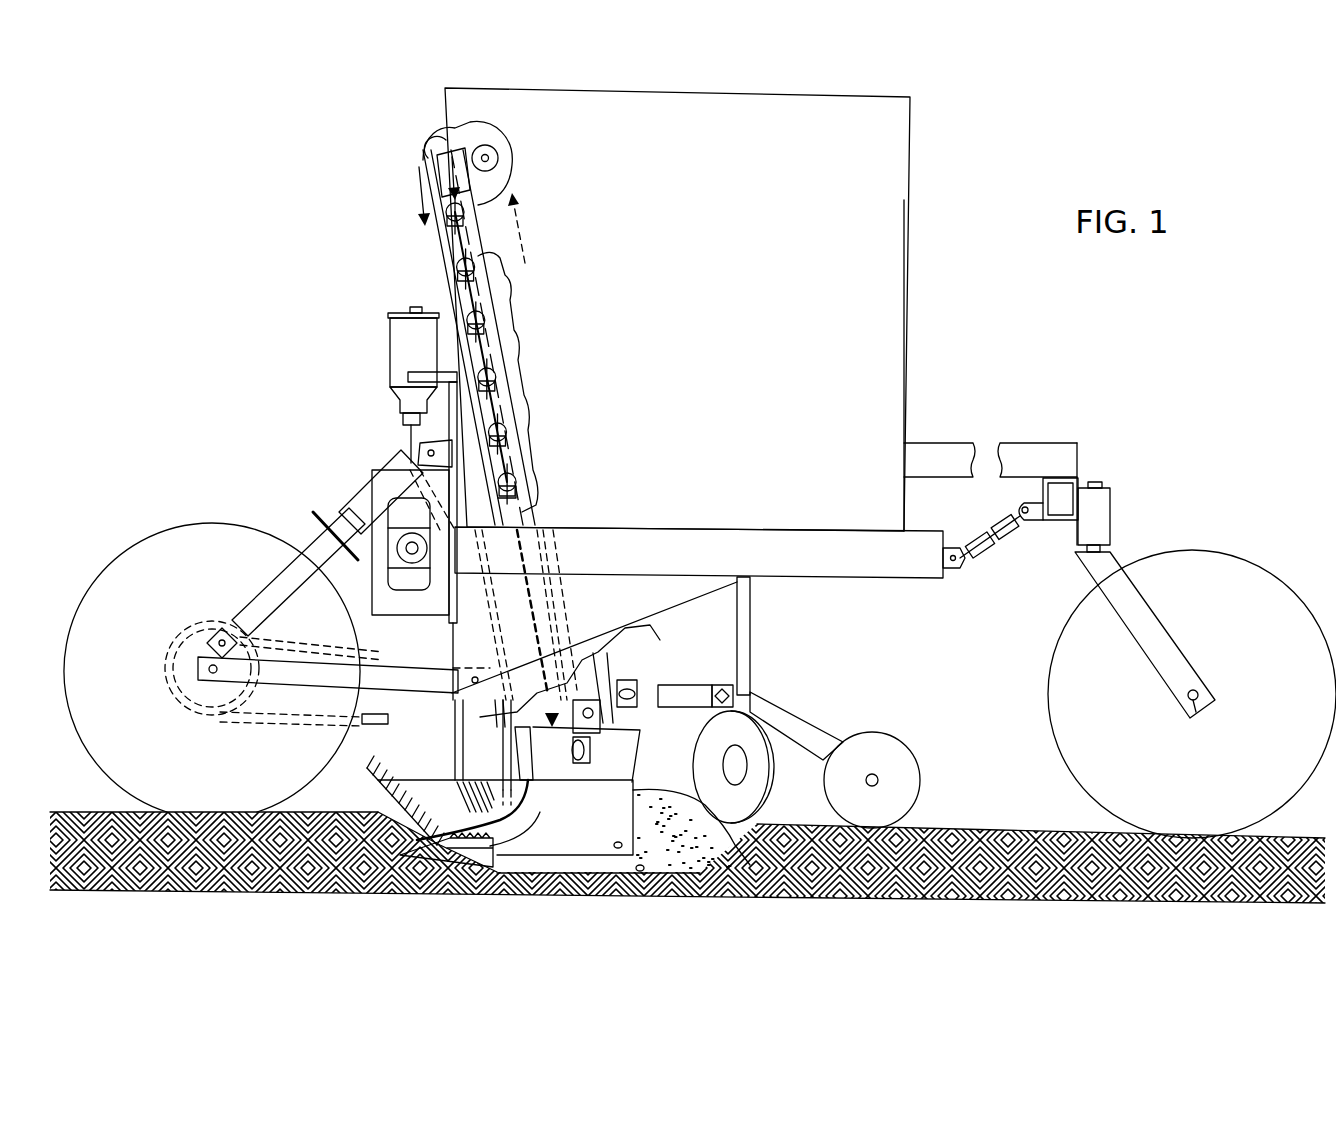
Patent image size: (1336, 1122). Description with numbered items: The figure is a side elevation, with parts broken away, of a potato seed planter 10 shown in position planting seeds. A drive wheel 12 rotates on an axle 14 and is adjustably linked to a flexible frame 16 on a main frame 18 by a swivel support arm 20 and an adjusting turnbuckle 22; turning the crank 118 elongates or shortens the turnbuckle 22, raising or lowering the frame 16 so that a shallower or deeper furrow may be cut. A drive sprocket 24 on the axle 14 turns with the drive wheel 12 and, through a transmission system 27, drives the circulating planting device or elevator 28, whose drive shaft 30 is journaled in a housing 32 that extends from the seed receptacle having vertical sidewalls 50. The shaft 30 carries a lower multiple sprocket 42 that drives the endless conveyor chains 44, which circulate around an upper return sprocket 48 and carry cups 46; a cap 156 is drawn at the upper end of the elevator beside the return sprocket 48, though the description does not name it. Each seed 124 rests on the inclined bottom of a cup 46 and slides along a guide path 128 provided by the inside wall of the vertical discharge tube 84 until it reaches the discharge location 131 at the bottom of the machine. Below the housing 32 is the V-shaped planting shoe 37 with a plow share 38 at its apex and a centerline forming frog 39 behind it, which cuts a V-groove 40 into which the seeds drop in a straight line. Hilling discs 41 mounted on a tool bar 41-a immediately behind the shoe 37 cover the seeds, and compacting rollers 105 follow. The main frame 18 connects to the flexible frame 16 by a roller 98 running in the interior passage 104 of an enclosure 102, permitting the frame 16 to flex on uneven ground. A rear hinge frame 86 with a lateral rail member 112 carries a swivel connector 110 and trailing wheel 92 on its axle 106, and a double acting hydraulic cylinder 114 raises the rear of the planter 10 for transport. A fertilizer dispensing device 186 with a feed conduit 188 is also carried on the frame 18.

The potato seed planter 10 is at (435, 246).
The drive wheel 12 is at (200, 523).
The axle 14 is at (205, 690).
The flexible frame 16 is at (872, 565).
The main frame 18 is at (398, 455).
The swivel support arm 20 is at (395, 688).
The adjusting crank or turnbuckle 22 is at (278, 582).
The drive sprocket 24 is at (185, 650).
The transmission system 27 is at (376, 725).
The circulating planting device or elevator 28 is at (615, 668).
The drive shaft 30 is at (606, 718).
The housing 32 is at (912, 190).
The planting shoe 37 is at (445, 780).
The plow share 38 is at (365, 793).
The furrow centerline forming frog 39 is at (505, 822).
The V-groove 40 is at (528, 866).
The hilling or harrow disc 41 is at (765, 795).
The tool bar 41-a is at (735, 696).
The lower multiple sprocket 42 is at (624, 755).
The endless conveyor chain or belt 44 is at (510, 168).
The cup or bucket 46 is at (518, 434).
The upper or return multiple sprocket 48 is at (492, 152).
The vertical sidewall 50 is at (872, 268).
The vertical discharge tube 84 is at (447, 270).
The rear hinge frame 86 is at (915, 440).
The swivel or trailing wheel 92 is at (1196, 552).
The roller 98 is at (375, 510).
The enclosure 102 is at (392, 548).
The interior passage 104 is at (412, 580).
The compacting drum or roller 105 is at (912, 760).
The axle 106 is at (1198, 705).
The swivel connector 110 is at (1112, 505).
The lateral rail member 112 is at (1043, 490).
The double acting hydraulic cylinder 114 is at (1005, 540).
The crank or handle 118 is at (312, 518).
The seed 124 is at (500, 320).
The guide path 128 is at (520, 484).
The seed discharge location 131 is at (520, 752).
The housing cap 156 is at (432, 146).
The fertilizer dispensing device 186 is at (390, 333).
The feed conduit 188 is at (496, 706).